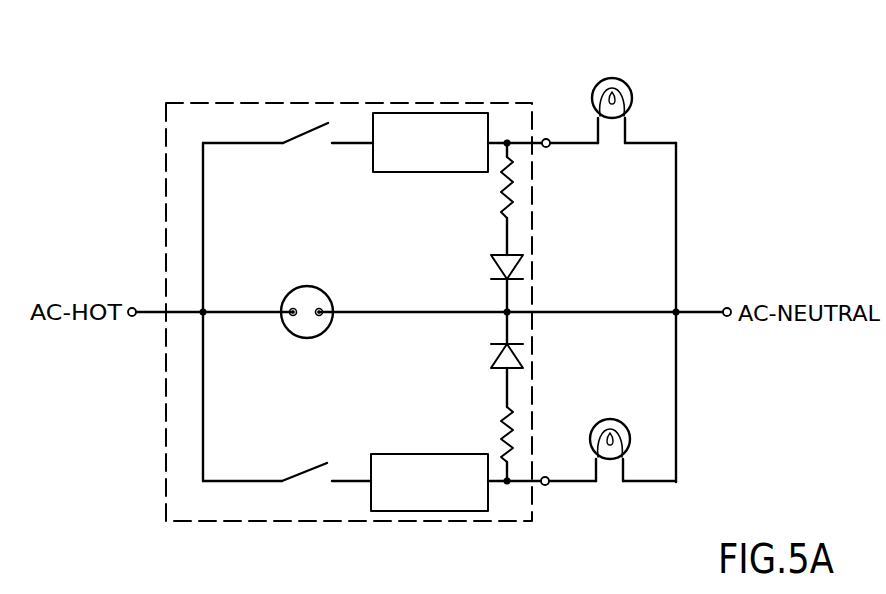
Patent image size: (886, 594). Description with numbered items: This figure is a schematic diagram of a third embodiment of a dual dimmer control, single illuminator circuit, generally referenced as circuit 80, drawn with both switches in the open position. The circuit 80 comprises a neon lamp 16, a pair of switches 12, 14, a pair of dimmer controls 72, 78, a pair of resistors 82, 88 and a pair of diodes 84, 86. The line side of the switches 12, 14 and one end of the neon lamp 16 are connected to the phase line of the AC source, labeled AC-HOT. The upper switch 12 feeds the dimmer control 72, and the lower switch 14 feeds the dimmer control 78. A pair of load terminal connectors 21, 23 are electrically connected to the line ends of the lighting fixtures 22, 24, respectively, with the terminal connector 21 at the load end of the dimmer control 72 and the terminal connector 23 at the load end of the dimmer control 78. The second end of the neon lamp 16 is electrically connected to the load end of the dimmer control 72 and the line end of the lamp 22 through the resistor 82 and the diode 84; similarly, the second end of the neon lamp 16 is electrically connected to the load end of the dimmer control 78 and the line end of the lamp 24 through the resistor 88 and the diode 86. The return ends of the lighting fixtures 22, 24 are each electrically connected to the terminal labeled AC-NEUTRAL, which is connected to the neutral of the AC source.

The dual dimmer control single illuminator circuit 80 is at (252, 97).
The switch 12 is at (305, 132).
The switch 14 is at (297, 475).
The neon lamp 16 is at (304, 287).
The load terminal connector 21 is at (546, 139).
The lighting fixture 22 is at (632, 98).
The load terminal connector 23 is at (547, 486).
The lighting fixture 24 is at (626, 425).
The dimmer control 72 is at (427, 173).
The dimmer control 78 is at (434, 453).
The resistor 82 is at (513, 192).
The diode 84 is at (522, 265).
The diode 86 is at (522, 360).
The resistor 88 is at (513, 432).